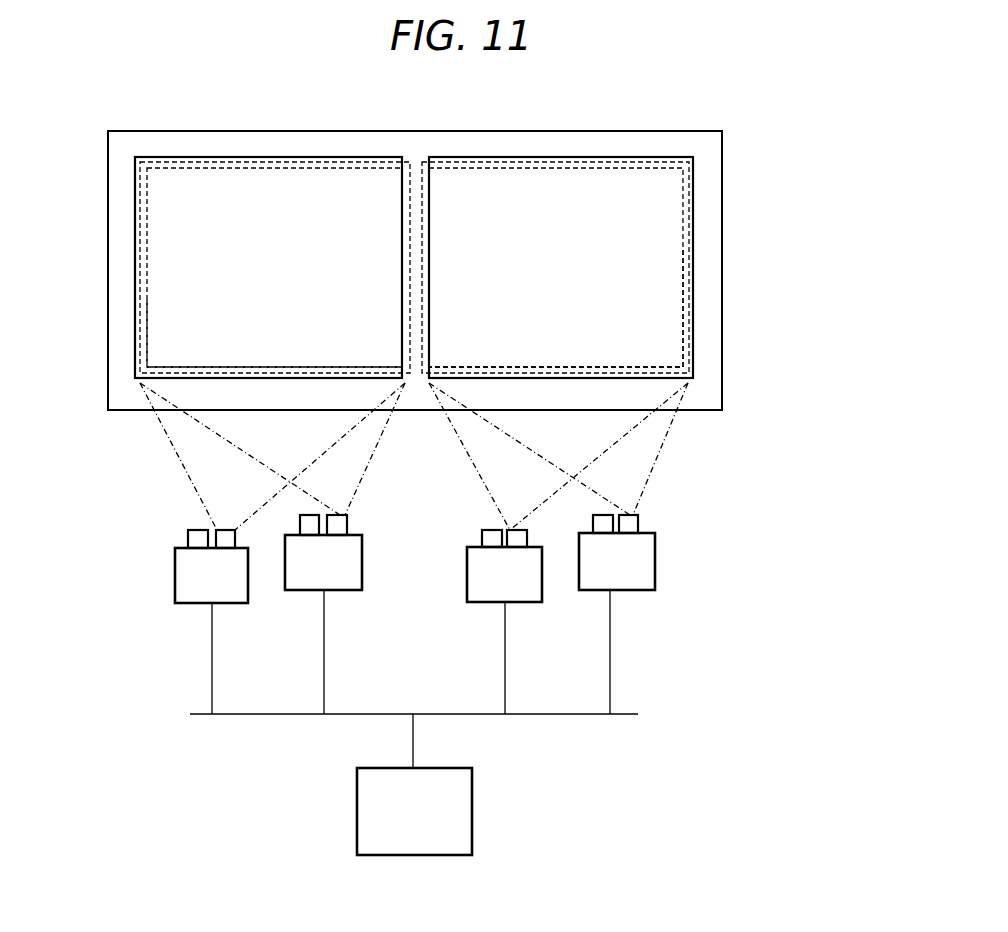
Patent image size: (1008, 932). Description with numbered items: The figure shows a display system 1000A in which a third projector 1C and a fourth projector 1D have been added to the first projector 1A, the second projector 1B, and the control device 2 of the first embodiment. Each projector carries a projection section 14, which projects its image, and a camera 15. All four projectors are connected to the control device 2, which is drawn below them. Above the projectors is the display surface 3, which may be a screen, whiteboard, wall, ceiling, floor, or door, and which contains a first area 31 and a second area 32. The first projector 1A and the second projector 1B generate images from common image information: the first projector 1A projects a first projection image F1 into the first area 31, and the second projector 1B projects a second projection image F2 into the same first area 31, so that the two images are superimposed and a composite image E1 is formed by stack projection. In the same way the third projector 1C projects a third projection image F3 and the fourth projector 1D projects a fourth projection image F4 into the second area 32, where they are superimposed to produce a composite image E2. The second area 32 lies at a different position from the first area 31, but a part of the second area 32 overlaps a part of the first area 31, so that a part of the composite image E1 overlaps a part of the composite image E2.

The display system 1000A is at (773, 413).
The display surface 3 is at (710, 131).
The first area 31 is at (320, 157).
The second area 32 is at (598, 157).
The composite image E1 is at (264, 163).
The composite image E2 is at (541, 163).
The first projection image F1 is at (150, 292).
The second projection image F2 is at (152, 330).
The third projection image F3 is at (670, 239).
The fourth projection image F4 is at (670, 277).
The first projector 1A is at (200, 603).
The second projector 1B is at (362, 580).
The third projector 1C is at (475, 602).
The fourth projector 1D is at (625, 592).
The projection section 14 is at (233, 540).
The camera 15 is at (188, 542).
The control device 2 is at (472, 808).